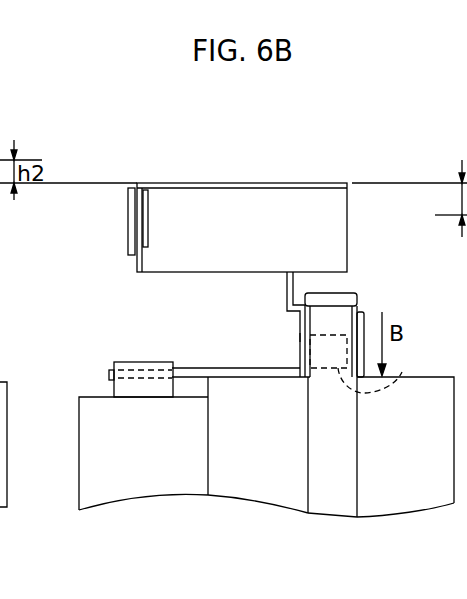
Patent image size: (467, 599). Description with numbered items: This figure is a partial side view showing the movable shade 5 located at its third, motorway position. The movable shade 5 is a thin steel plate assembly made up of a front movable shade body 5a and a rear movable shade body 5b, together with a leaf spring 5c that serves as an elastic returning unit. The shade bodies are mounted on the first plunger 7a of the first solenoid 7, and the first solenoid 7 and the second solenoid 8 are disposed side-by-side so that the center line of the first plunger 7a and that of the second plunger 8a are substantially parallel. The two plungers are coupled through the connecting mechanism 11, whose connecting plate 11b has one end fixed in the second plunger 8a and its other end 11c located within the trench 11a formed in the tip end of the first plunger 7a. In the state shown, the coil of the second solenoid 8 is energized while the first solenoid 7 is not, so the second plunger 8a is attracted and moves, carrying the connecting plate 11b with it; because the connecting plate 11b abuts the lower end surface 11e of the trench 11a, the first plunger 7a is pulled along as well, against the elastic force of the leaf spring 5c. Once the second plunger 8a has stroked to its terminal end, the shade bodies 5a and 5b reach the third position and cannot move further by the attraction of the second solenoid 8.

The movable shade 5 is at (160, 178).
The front movable shade body 5a is at (128, 222).
The rear movable shade body 5b is at (233, 210).
The leaf spring 5c is at (335, 490).
The first solenoid 7 is at (251, 498).
The first plunger 7a is at (366, 315).
The second solenoid 8 is at (142, 494).
The second plunger 8a is at (133, 362).
The connecting mechanism 11 is at (207, 362).
The trench 11a is at (307, 338).
The connecting plate 11b is at (183, 368).
The other end of the connecting plate 11c is at (310, 353).
The lower end surface 11e is at (402, 376).